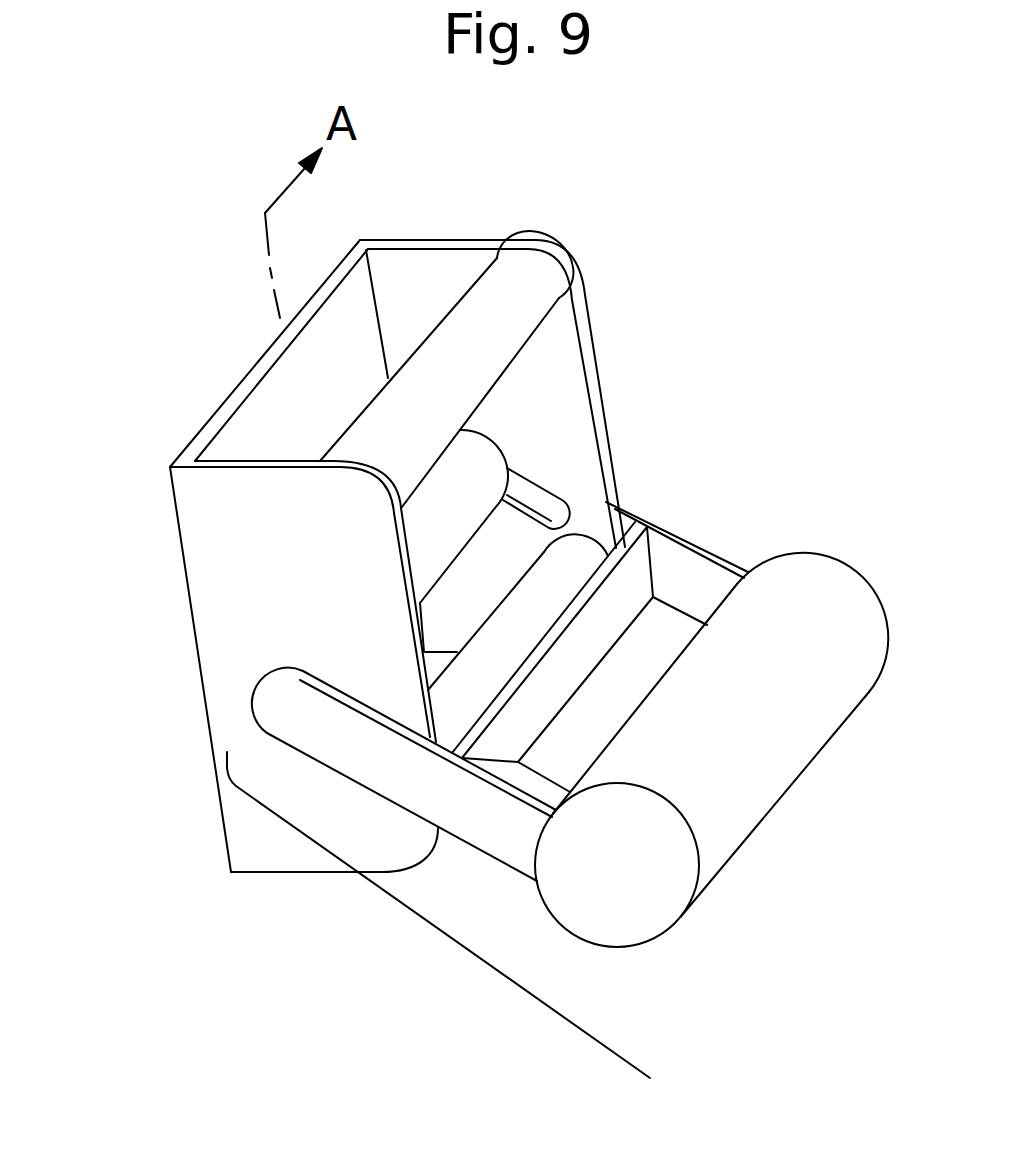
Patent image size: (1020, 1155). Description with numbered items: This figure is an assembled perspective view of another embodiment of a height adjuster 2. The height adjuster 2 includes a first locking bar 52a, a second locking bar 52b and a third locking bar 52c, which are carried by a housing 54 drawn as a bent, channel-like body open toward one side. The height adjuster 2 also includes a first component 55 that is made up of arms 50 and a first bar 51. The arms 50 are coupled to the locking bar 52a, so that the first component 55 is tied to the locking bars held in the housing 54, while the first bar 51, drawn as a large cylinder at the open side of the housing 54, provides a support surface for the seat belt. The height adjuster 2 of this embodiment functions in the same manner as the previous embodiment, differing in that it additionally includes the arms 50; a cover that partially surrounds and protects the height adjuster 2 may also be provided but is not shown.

The height adjuster 2 is at (97, 160).
The arms 50 is at (705, 548).
The first bar 51 is at (828, 584).
The first locking bar 52a is at (582, 550).
The second locking bar 52b is at (513, 283).
The third locking bar 52c is at (487, 458).
The housing 54 is at (232, 398).
The first component 55 is at (447, 930).